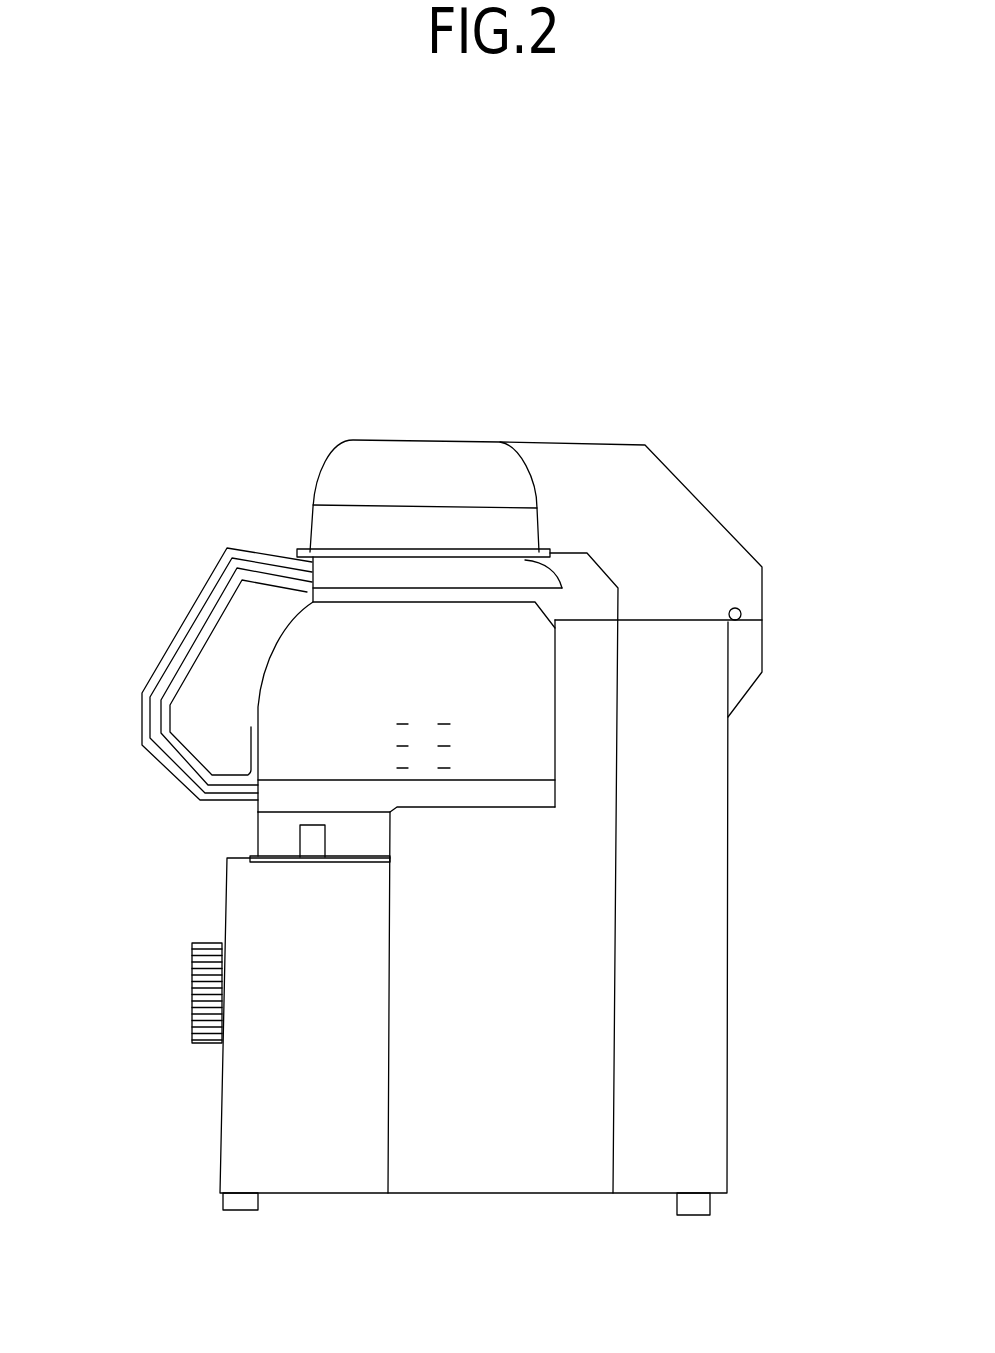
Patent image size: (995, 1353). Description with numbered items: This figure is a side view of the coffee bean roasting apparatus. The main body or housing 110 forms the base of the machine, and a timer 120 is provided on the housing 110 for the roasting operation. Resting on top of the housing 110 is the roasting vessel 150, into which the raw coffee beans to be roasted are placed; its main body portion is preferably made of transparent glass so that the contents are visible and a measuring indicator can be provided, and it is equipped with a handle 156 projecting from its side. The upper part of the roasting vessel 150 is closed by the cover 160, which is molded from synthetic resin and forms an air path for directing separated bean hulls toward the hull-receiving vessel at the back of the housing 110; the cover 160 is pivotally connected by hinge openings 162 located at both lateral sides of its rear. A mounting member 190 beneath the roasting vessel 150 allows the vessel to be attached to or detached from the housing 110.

The main body or housing 110 is at (757, 1102).
The timer 120 is at (185, 1018).
The roasting vessel 150 is at (260, 530).
The handle 156 is at (180, 640).
The cover 160 is at (430, 412).
The hinge openings 162 is at (741, 614).
The mounting member 190 is at (295, 838).